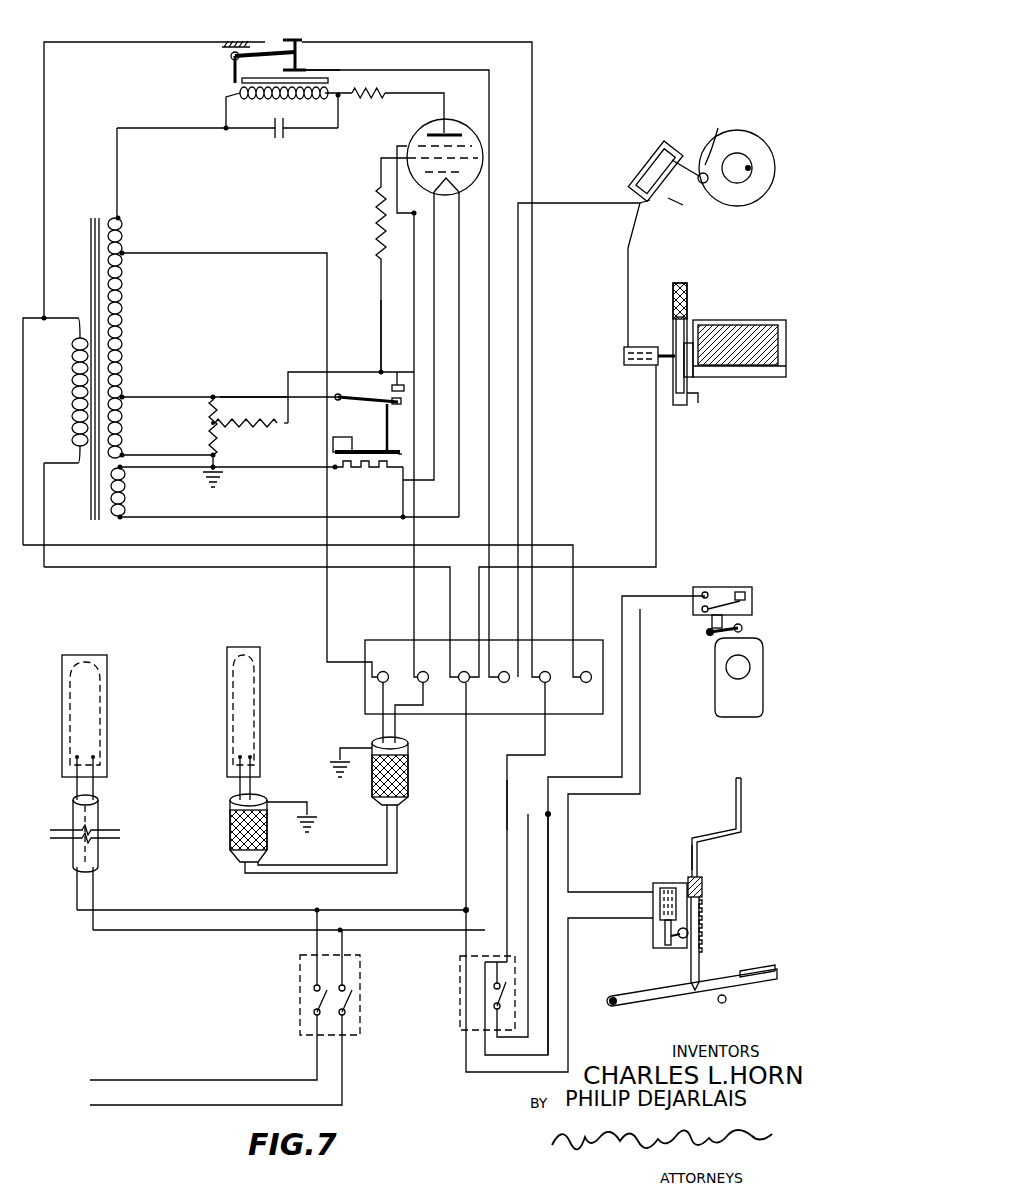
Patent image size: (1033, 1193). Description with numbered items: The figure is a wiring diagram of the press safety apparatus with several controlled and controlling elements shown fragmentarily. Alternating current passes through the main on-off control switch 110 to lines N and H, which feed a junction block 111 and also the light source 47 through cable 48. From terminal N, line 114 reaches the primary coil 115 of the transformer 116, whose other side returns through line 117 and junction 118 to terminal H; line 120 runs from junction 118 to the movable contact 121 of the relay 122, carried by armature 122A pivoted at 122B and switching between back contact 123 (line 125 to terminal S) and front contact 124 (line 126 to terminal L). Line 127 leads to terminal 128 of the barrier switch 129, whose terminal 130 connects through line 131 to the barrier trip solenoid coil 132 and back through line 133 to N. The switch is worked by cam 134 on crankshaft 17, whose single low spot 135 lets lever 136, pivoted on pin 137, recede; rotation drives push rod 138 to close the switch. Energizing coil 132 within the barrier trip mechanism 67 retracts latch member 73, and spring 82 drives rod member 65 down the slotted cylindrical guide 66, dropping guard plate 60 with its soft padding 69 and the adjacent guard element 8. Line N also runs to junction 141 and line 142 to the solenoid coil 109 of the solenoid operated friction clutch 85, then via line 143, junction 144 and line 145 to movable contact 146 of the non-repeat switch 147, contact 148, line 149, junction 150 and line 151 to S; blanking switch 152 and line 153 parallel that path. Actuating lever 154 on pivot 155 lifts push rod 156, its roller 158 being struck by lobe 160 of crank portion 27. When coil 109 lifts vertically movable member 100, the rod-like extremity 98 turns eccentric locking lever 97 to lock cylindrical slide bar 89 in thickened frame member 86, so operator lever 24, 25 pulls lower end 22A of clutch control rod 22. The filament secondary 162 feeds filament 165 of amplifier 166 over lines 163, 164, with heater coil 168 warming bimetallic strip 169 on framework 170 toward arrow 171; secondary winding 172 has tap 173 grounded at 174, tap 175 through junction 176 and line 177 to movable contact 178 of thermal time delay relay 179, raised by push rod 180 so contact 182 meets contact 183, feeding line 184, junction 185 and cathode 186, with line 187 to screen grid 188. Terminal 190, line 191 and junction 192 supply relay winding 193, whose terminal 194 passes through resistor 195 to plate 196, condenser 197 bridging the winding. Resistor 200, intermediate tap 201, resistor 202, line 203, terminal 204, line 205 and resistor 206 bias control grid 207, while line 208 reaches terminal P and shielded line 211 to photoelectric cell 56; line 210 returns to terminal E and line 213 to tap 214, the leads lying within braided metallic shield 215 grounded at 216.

The window 8 is at (745, 360).
The crankshaft 17 is at (745, 160).
The clutch control rod 22 is at (743, 790).
The lower end of clutch control rod 22A is at (698, 855).
The operator treadle lever 24 is at (690, 990).
The operator lever 25 is at (765, 966).
The crank portion 27 is at (727, 672).
The light source 47 is at (118, 640).
The cable 48 is at (100, 808).
The photoelectric cell 56 is at (233, 700).
The guard plate 60 is at (735, 319).
The vertically movable rod member 65 is at (682, 330).
The slotted cylindrical guide 66 is at (698, 404).
The barrier trip mechanism 67 is at (648, 344).
The soft padding 69 is at (770, 377).
The latch member 73 is at (672, 330).
The spring 82 is at (686, 300).
The solenoid operated friction clutch 85 is at (704, 906).
The thickened frame member 86 is at (703, 886).
The cylindrical slide bar 89 is at (700, 958).
The eccentric locking lever 97 is at (681, 939).
The rod-like extremity 98 is at (676, 939).
The vertically movable member 100 is at (664, 933).
The solenoid coil 109 is at (659, 906).
The main on-off control switch 110 is at (355, 1036).
The junction block 111 is at (495, 702).
The line 114 is at (258, 569).
The primary coil 115 is at (74, 389).
The transformer 116 is at (96, 212).
The line 117 is at (47, 317).
The junction 118 is at (51, 431).
The line 120 is at (45, 120).
The movable contact 121 is at (268, 51).
The relay 122 is at (236, 82).
The armature 122A is at (230, 57).
The pivot 122B is at (236, 46).
The back contact 123 is at (299, 40).
The front contact 124 is at (326, 69).
The line 125 is at (533, 56).
The line 126 is at (490, 100).
The line 127 is at (556, 205).
The barrier switch terminal 128 is at (645, 165).
The barrier switch 129 is at (663, 212).
The barrier switch terminal 130 is at (668, 150).
The line 131 is at (628, 280).
The barrier trip solenoid coil 132 is at (636, 368).
The line 133 is at (655, 450).
The cam 134 is at (752, 130).
The low spot 135 is at (722, 128).
The lever 136 is at (708, 180).
The pin 137 is at (684, 207).
The push rod 138 is at (690, 160).
The junction 141 is at (463, 908).
The line 142 is at (466, 1063).
The line 143 is at (550, 840).
The junction 144 is at (551, 813).
The line 145 is at (641, 770).
The movable contact 146 is at (752, 605).
The non-repeat switch 147 is at (740, 570).
The stationary contact 148 is at (704, 591).
The line 149 is at (652, 592).
The junction 150 is at (496, 959).
The line 151 is at (508, 812).
The blanking switch 152 is at (494, 984).
The line 153 is at (530, 910).
The actuating lever 154 is at (716, 636).
The pivot 155 is at (706, 633).
The push rod 156 is at (724, 622).
The roller 158 is at (744, 630).
The lobe 160 is at (764, 650).
The filament secondary 162 is at (126, 490).
The filament lead 163 is at (272, 468).
The line 164 is at (272, 516).
The filament 165 is at (457, 202).
The amplifier 166 is at (406, 140).
The heater coil 168 is at (380, 470).
The bimetallic strip 169 is at (367, 450).
The framework 170 is at (343, 436).
The arrow 171 is at (402, 432).
The secondary winding 172 is at (128, 344).
The tap 173 is at (140, 455).
The ground 174 is at (216, 465).
The tap 175 is at (128, 395).
The junction 176 is at (213, 395).
The line 177 is at (237, 396).
The movable contact 178 is at (371, 403).
The thermal time delay relay 179 is at (369, 385).
The push rod 180 is at (390, 426).
The contact 182 is at (402, 400).
The contact 183 is at (397, 382).
The line 184 is at (416, 305).
The junction 185 is at (413, 216).
The cathode 186 is at (452, 186).
The line 187 is at (411, 179).
The screen grid 188 is at (472, 148).
The terminal 190 is at (121, 217).
The line 191 is at (118, 181).
The junction 192 is at (228, 130).
The relay winding 193 is at (270, 101).
The terminal 194 is at (345, 92).
The resistor 195 is at (369, 97).
The plate 196 is at (450, 132).
The condenser 197 is at (285, 132).
The resistor 200 is at (209, 410).
The intermediate tap 201 is at (217, 422).
The resistor 202 is at (258, 428).
The line 203 is at (289, 410).
The terminal 204 is at (385, 368).
The line 205 is at (380, 305).
The resistor 206 is at (378, 232).
The control grid 207 is at (479, 160).
The line 208 is at (406, 493).
The line 210 is at (396, 732).
The shielded line 211 is at (258, 791).
The line 213 is at (330, 619).
The tap 214 is at (126, 252).
The braided metallic shield 215 is at (229, 828).
The ground 216 is at (292, 801).